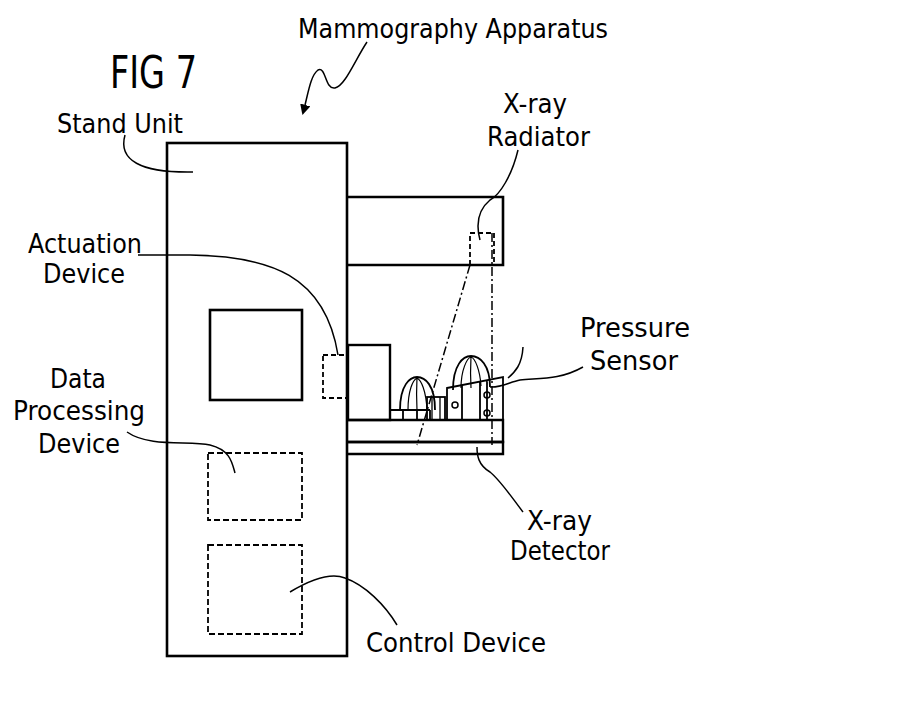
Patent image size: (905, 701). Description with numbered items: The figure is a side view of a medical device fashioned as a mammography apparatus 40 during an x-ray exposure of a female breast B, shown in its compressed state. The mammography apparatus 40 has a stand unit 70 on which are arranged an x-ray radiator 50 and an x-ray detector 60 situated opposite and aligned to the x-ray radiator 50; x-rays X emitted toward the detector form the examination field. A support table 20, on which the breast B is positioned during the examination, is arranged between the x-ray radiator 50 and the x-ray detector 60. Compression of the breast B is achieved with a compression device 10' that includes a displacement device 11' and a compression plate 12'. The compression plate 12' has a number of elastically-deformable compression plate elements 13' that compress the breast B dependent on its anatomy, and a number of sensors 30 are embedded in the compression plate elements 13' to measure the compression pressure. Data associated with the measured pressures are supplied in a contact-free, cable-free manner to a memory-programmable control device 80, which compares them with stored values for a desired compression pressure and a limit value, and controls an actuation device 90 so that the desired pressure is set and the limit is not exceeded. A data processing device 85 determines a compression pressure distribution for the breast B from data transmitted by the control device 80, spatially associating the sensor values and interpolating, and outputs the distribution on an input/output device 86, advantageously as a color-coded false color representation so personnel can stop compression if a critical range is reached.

The stand unit 70 is at (182, 192).
The mammography apparatus 40 is at (366, 120).
The x-ray radiator 50 is at (483, 242).
The x-rays X is at (483, 302).
The input/output (I/O) device 86 is at (210, 345).
The actuation device 90 is at (330, 397).
The data processing device 85 is at (215, 492).
The control device 80 is at (215, 598).
The displacement device 11' is at (369, 353).
The compression device 10' is at (410, 347).
The compression plate 12' is at (436, 353).
The compression plate elements 13' is at (454, 370).
The sensors 30 is at (495, 395).
The female breast B is at (415, 422).
The support table 20 is at (382, 430).
The x-ray detector 60 is at (505, 428).